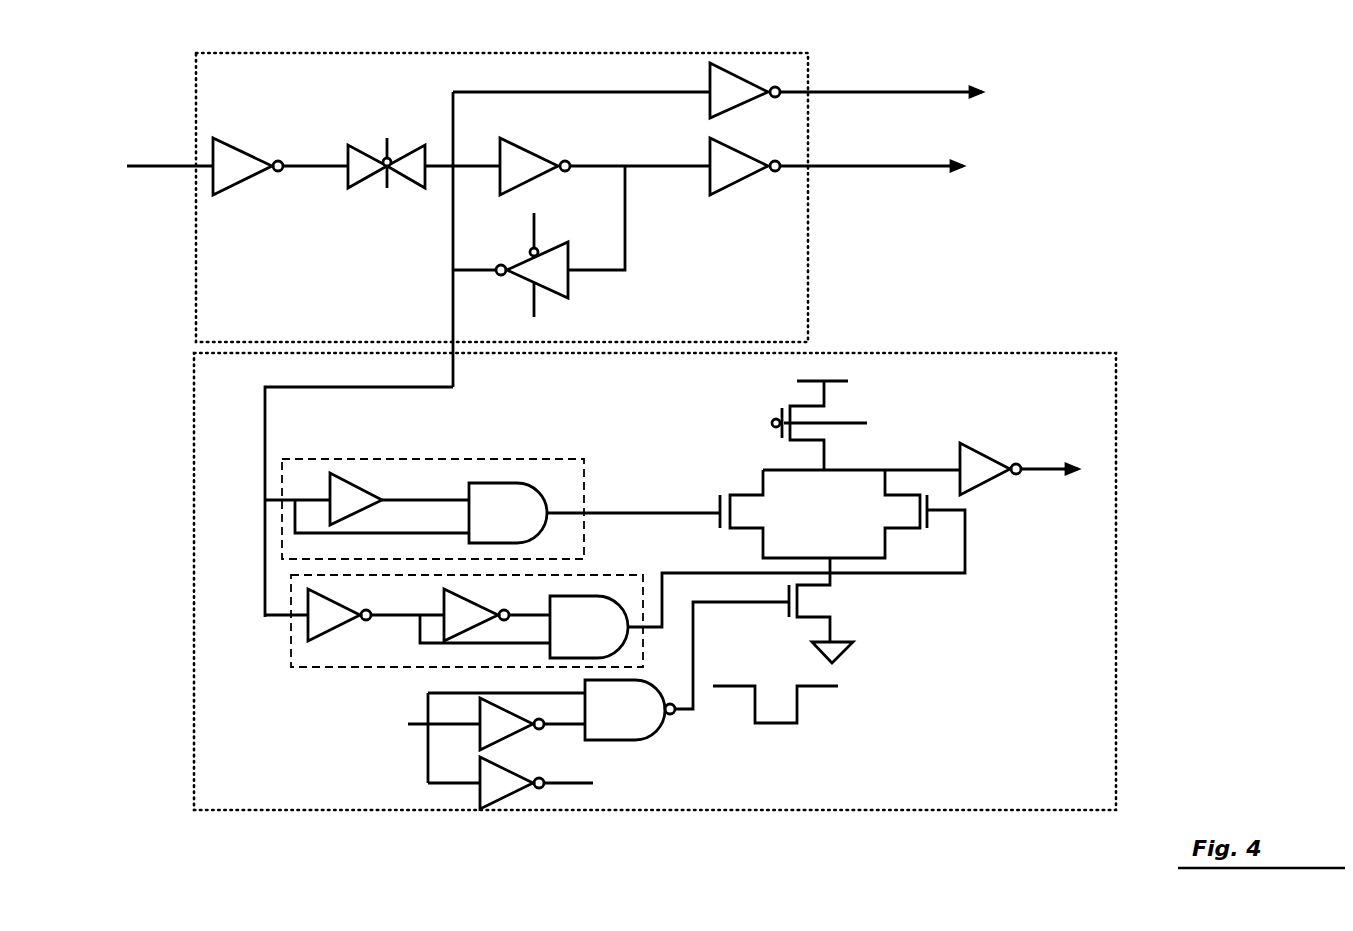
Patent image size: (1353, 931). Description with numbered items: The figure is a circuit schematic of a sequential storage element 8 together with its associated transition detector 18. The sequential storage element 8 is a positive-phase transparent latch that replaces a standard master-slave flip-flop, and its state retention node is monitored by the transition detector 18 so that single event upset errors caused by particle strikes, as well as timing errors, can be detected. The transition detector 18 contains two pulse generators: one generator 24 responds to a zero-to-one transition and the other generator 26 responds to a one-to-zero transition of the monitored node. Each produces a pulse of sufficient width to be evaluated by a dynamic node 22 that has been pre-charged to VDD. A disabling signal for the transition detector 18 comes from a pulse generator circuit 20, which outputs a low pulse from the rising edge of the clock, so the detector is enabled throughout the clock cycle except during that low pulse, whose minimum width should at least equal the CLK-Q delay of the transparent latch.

The sequential storage element 8 is at (180, 94).
The transition detector 18 is at (178, 568).
The pulse generator circuit 20 is at (674, 721).
The dynamic node 22 is at (841, 461).
The pulse generator for the 0 to 1 transition 24 is at (548, 451).
The pulse generator for the 1 to 0 transition 26 is at (574, 573).